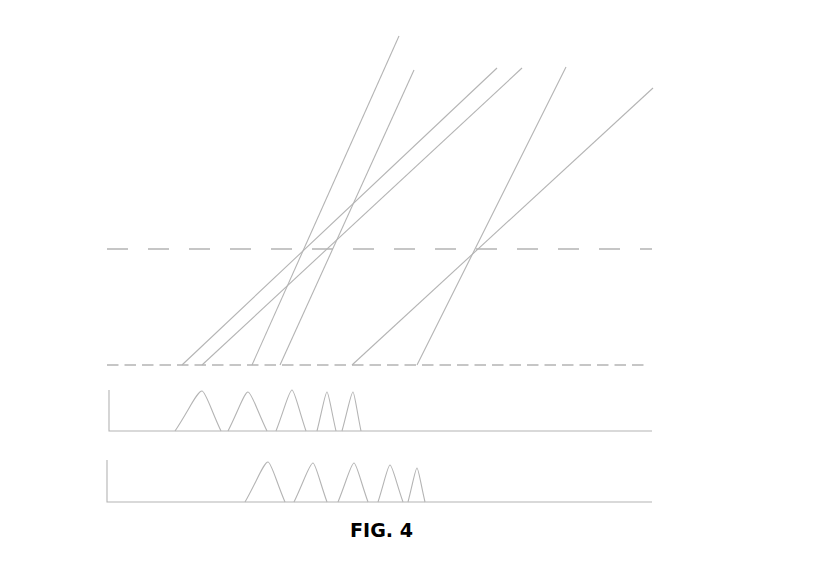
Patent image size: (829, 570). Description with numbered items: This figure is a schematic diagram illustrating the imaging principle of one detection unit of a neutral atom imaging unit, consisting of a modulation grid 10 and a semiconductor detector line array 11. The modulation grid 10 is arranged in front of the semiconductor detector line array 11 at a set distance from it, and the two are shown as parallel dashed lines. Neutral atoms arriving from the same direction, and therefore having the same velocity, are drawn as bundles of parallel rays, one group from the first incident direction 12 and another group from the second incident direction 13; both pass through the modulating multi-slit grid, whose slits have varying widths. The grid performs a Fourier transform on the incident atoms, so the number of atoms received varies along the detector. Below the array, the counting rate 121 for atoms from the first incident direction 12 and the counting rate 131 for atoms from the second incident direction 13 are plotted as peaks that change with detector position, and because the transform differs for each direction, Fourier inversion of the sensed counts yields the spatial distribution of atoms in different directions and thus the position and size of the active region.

The modulation grid 10 is at (653, 250).
The semiconductor detector line array 11 is at (645, 364).
The first incident direction 12 is at (508, 82).
The second incident direction 13 is at (415, 72).
The counting rate for the first incident direction 121 is at (182, 400).
The counting rate for the second incident direction 131 is at (243, 482).